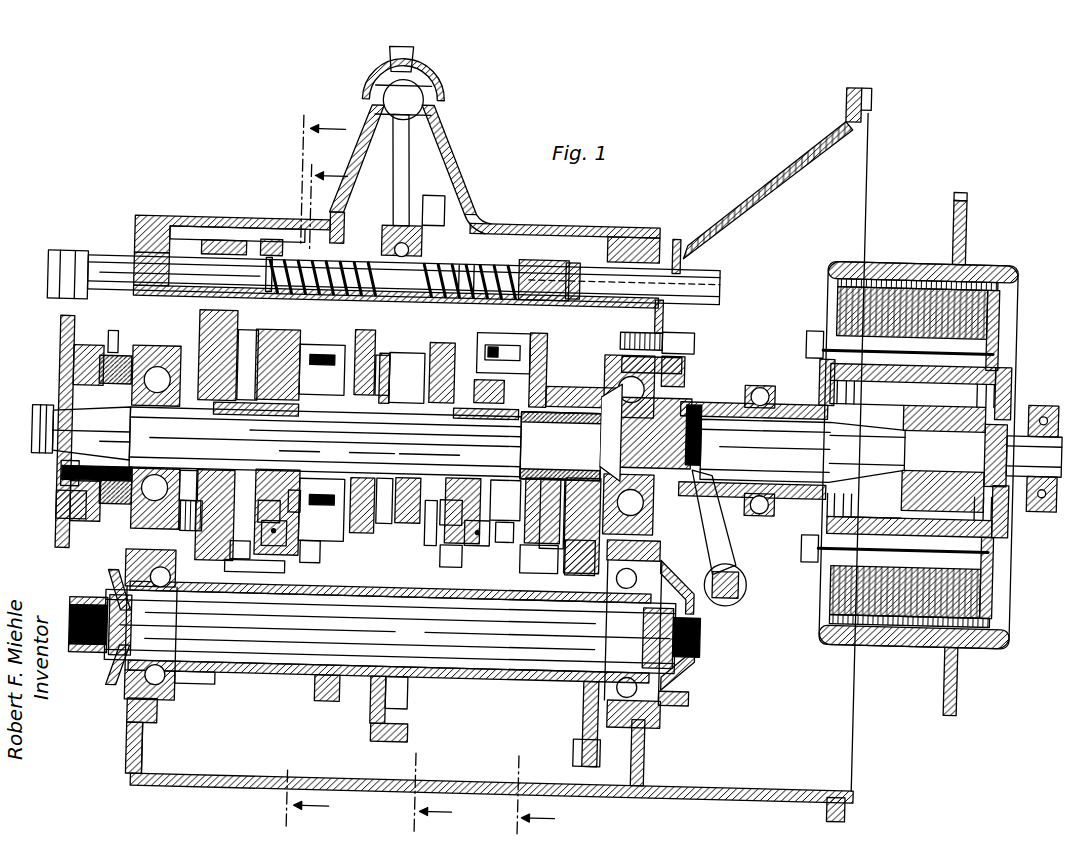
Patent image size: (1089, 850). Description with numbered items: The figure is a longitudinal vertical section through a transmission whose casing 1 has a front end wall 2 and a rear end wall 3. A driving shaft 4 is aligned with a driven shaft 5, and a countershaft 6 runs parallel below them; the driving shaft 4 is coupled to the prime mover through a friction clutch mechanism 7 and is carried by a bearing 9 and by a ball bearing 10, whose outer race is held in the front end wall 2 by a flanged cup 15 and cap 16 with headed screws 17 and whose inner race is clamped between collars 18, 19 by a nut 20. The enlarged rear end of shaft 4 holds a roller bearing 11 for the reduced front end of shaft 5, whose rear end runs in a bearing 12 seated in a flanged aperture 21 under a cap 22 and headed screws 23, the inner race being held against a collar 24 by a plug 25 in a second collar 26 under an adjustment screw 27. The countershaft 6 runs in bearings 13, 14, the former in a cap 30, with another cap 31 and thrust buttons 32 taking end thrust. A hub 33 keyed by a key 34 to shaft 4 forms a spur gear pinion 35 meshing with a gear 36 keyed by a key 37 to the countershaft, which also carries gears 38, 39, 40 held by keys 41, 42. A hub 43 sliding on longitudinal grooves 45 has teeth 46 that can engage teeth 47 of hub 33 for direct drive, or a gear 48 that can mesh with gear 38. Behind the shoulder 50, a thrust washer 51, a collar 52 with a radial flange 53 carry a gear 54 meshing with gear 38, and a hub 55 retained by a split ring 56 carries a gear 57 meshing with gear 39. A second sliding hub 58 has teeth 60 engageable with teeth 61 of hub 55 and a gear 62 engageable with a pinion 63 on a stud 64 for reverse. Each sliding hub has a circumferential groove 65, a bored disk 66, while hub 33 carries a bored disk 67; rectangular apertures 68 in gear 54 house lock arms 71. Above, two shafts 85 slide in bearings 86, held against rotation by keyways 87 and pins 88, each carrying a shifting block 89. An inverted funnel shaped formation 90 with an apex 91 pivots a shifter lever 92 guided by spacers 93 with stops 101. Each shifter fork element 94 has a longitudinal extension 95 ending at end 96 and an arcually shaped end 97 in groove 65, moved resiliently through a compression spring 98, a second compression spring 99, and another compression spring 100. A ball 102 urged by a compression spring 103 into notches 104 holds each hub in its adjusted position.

The transmission casing 1 is at (196, 218).
The front end wall 2 is at (410, 128).
The rear end wall 3 is at (128, 742).
The driving shaft 4 is at (790, 425).
The driven shaft 5 is at (70, 405).
The countershaft 6 is at (248, 660).
The friction clutch mechanism 7 is at (990, 322).
The bearing 9 is at (1048, 420).
The bearing 10 is at (675, 372).
The roller bearing 11 is at (560, 500).
The bearing 12 is at (156, 362).
The bearing 13 is at (658, 695).
The bearing 14 is at (125, 680).
The flanged cup 15 is at (660, 340).
The cap 16 is at (680, 348).
The headed screws 17 is at (690, 345).
The collar 18 is at (692, 382).
The collar 19 is at (615, 365).
The nut 20 is at (710, 508).
The flanged aperture 21 is at (196, 345).
The cap 22 is at (108, 365).
The headed screws 23 is at (115, 345).
The collar 24 is at (245, 372).
The plug 25 is at (105, 495).
The second collar 26 is at (58, 500).
The adjustment screw 27 is at (62, 476).
The cap 30 is at (685, 692).
The cap 31 is at (112, 665).
The thrust buttons 32 is at (112, 600).
The hub 33 is at (570, 535).
The key 34 is at (572, 395).
The spur gear pinion 35 is at (575, 372).
The gear 36 is at (580, 740).
The key 37 is at (540, 588).
The gear 38 is at (392, 730).
The gear 39 is at (318, 705).
The gear 40 is at (196, 695).
The key 41 is at (362, 685).
The key 42 is at (310, 600).
The hub 43 is at (457, 569).
The longitudinal grooves 45 is at (210, 472).
The teeth 46 is at (492, 515).
The teeth 47 is at (508, 543).
The gear 48 is at (438, 545).
The shoulder 50 is at (380, 426).
The thrust washer 51 is at (420, 450).
The collar 52 is at (375, 450).
The radial flange 53 is at (380, 505).
The gear 54 is at (372, 350).
The hub 55 is at (358, 372).
The split ring 56 is at (296, 448).
The gear 57 is at (360, 525).
The hub 58 is at (248, 556).
The teeth 60 is at (304, 546).
The teeth 61 is at (290, 512).
The gear 62 is at (240, 348).
The pinion 63 is at (218, 530).
The stud 64 is at (232, 580).
The circumferential groove 65 is at (268, 508).
The bored disk 66 is at (270, 535).
The bored disk 67 is at (548, 372).
The rectangular apertures 68 is at (407, 377).
The lock arm 71 is at (325, 350).
The shafts 85 is at (715, 275).
The bearings 86 is at (170, 225).
The keyways 87 is at (715, 245).
The pins 88 is at (676, 240).
The shifting block 89 is at (382, 232).
The inverted funnel shaped formation 90 is at (445, 145).
The apex 91 is at (432, 110).
The shifter lever 92 is at (413, 62).
The spacers 93 is at (445, 220).
The shifter fork element 94 is at (268, 240).
The longitudinal extension 95 is at (492, 258).
The end 96 is at (226, 228).
The arcually shaped end 97 is at (440, 350).
The compression spring 98 is at (478, 258).
The second compression spring 99 is at (286, 218).
The compression spring 100 is at (462, 262).
The stops 101 is at (470, 210).
The ball 102 is at (300, 426).
The compression spring 103 is at (235, 410).
The notches 104 is at (425, 375).